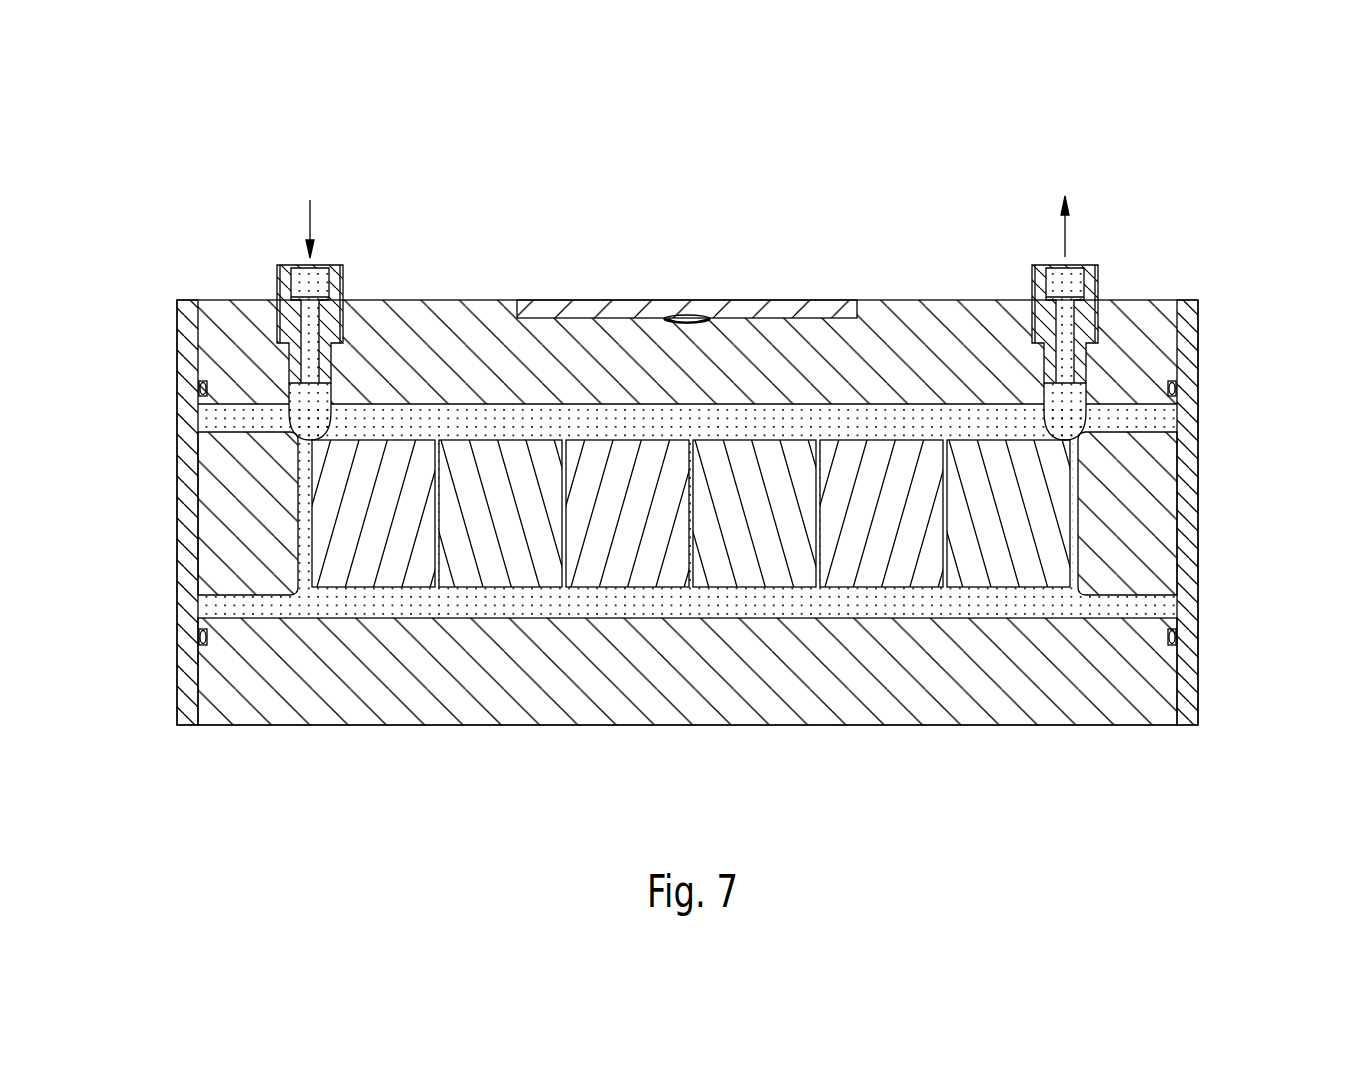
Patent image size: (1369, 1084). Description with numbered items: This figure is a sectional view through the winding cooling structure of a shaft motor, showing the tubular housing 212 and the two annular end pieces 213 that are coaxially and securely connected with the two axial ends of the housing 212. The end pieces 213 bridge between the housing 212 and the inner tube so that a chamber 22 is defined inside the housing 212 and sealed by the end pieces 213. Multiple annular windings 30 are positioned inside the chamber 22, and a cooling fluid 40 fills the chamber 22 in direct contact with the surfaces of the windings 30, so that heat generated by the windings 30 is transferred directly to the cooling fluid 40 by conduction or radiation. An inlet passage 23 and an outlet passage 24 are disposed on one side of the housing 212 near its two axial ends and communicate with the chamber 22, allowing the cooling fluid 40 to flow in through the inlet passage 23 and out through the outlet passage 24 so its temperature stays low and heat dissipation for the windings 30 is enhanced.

The chamber 22 is at (583, 407).
The inlet passage 23 is at (296, 264).
The outlet passage 24 is at (1080, 267).
The annular windings 30 is at (765, 565).
The cooling fluid 40 is at (415, 420).
The housing 212 is at (940, 345).
The end pieces 213 is at (1198, 442).